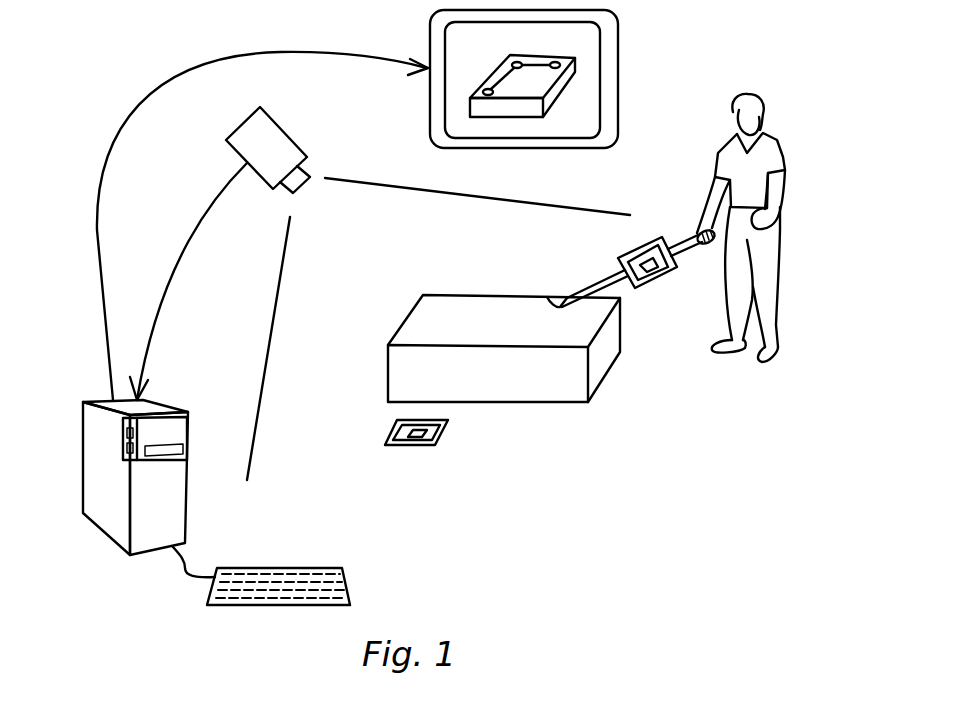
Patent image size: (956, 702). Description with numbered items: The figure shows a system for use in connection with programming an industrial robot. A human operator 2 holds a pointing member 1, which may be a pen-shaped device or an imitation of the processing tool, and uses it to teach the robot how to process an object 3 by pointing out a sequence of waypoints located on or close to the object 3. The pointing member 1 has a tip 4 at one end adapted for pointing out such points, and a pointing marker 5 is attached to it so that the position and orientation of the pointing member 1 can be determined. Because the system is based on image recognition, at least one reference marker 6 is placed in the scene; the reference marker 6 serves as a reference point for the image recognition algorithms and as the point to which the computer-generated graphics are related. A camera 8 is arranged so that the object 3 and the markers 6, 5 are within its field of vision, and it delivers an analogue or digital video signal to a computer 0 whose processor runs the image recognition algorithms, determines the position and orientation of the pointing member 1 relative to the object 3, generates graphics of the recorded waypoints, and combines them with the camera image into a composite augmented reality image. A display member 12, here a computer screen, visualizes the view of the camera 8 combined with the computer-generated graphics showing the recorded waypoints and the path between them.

The computer 0 is at (92, 445).
The pointing member 1 is at (597, 282).
The human operator 2 is at (772, 152).
The object 3 is at (528, 385).
The tip 4 is at (547, 297).
The pointing marker 5 is at (643, 237).
The reference marker 6 is at (413, 448).
The camera 8 is at (273, 133).
The display member 12 is at (608, 40).